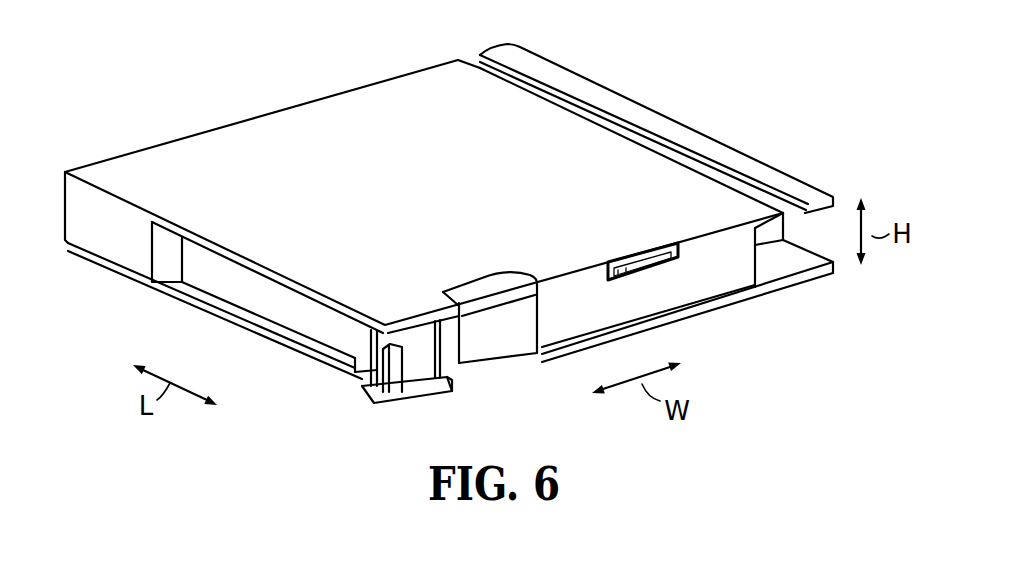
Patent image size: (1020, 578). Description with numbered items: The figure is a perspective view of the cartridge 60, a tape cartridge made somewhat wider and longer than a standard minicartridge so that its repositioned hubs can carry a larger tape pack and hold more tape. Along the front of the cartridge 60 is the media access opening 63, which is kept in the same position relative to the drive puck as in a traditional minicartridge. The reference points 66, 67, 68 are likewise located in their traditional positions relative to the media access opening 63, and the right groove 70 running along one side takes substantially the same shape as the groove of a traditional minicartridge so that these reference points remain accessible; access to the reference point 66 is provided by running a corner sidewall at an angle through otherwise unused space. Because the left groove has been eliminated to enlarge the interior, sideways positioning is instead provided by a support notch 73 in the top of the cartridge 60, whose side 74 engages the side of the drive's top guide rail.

The cartridge 60 is at (297, 64).
The media access opening 63 is at (468, 285).
The reference point 66 is at (771, 268).
The reference point 67 is at (372, 386).
The reference point 68 is at (190, 294).
The right groove 70 is at (298, 330).
The support notch 73 is at (478, 62).
The side of the notch 74 is at (529, 80).